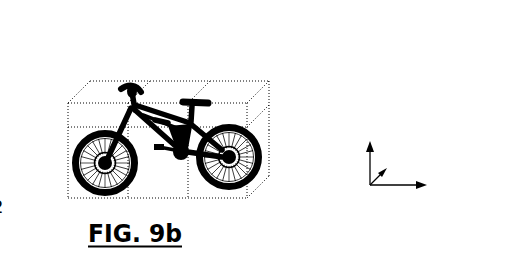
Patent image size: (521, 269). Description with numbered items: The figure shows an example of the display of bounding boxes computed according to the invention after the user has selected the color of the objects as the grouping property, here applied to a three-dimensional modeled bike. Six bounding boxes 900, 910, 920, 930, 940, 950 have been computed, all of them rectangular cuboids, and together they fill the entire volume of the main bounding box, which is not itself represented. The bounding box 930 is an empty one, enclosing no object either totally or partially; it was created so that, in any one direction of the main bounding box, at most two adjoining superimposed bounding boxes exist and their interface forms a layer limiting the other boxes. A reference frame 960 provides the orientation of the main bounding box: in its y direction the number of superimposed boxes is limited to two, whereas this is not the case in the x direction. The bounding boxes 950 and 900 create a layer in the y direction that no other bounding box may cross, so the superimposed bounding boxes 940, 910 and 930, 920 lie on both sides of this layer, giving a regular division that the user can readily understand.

The bounding box 900 is at (90, 187).
The bounding box 910 is at (178, 190).
The bounding box 920 is at (267, 165).
The bounding box 930 is at (270, 92).
The bounding box 940 is at (192, 85).
The bounding box 950 is at (103, 90).
The reference frame 960 is at (420, 131).